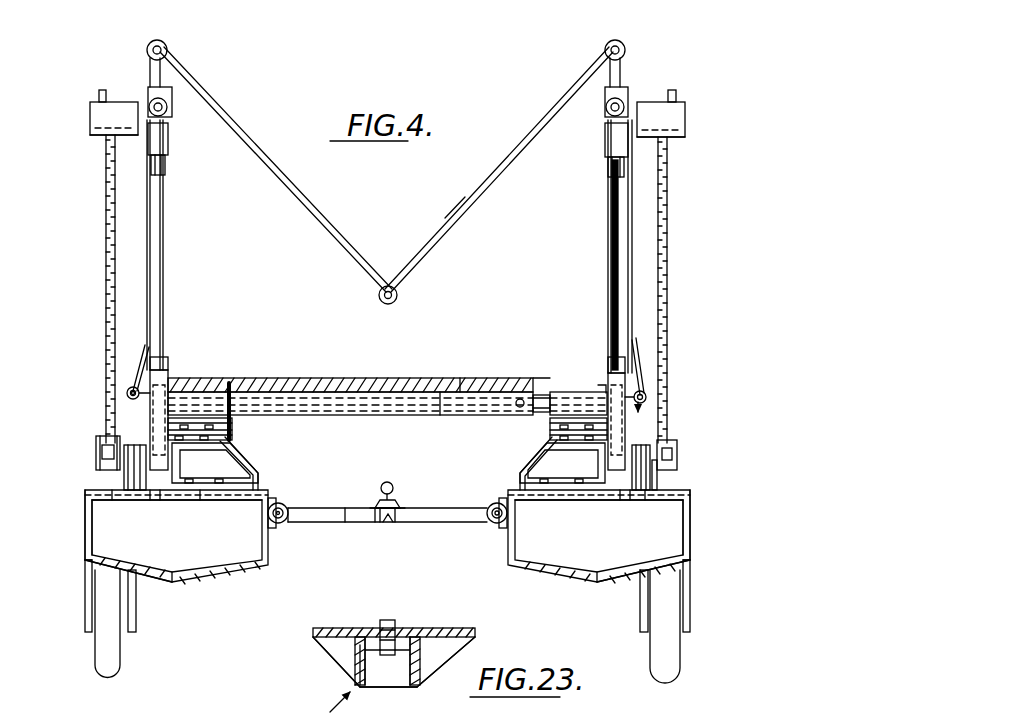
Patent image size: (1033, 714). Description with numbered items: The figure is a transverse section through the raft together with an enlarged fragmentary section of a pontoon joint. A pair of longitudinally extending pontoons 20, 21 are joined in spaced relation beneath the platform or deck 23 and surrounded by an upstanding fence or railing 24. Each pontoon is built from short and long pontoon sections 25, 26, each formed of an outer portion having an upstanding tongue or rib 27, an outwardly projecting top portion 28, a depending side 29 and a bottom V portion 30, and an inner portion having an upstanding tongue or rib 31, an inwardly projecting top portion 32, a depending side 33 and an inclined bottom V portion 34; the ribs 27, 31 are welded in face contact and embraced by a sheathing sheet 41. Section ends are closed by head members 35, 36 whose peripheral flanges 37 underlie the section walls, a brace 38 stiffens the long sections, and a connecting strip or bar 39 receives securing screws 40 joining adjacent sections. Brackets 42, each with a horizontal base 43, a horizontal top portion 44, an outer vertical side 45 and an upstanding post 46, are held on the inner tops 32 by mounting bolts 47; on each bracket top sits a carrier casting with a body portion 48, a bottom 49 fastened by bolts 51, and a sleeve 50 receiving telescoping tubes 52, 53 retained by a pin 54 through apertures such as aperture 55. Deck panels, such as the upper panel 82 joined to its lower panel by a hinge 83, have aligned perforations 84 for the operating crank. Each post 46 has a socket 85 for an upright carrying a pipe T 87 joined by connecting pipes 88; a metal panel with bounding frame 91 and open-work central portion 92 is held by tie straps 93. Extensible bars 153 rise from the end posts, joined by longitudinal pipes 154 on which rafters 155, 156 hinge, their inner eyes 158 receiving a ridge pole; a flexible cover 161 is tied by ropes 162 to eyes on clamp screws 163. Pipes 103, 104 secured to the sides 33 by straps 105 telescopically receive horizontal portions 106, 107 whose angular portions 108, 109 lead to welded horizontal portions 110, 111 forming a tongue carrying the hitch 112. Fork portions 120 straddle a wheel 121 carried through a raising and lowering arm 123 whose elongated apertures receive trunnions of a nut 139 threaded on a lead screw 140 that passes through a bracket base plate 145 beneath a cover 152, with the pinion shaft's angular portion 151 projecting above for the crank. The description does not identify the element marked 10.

In FIG. 4, the direction arrow 10 is at (653, 413).
In FIG. 4, the pontoon 20 is at (85, 562).
In FIG. 4, the pontoon 21 is at (690, 564).
In FIG. 4, the platform or deck 23 is at (412, 358).
In FIG. 4, the fence or railing 24 is at (179, 213).
In FIG. 23, the pontoon section 25 is at (333, 662).
In FIG. 4, the pontoon section 26 is at (262, 575).
In FIG. 23, the pontoon section 26 is at (455, 672).
In FIG. 4, the upstanding tongue or rib 27 is at (120, 495).
In FIG. 4, the horizontal top portion 28 is at (86, 492).
In FIG. 4, the depending side 29 is at (85, 525).
In FIG. 4, the bottom V portion 30 is at (160, 584).
In FIG. 23, the bottom V portion 30 is at (323, 646).
In FIG. 4, the upstanding tongue or rib 31 is at (150, 495).
In FIG. 4, the horizontal top portion 32 is at (192, 495).
In FIG. 4, the depending side 33 is at (265, 547).
In FIG. 23, the depending side 33 is at (340, 614).
In FIG. 4, the bottom V portion 34 is at (215, 580).
In FIG. 23, the head member 35 is at (390, 687).
In FIG. 23, the head member 36 is at (358, 672).
In FIG. 23, the peripheral flange 37 is at (361, 640).
In FIG. 4, the brace 38 is at (192, 576).
In FIG. 23, the connecting strip or bar 39 is at (420, 659).
In FIG. 23, the securing screws 40 is at (394, 627).
In FIG. 4, the sheathing sheet 41 is at (128, 450).
In FIG. 4, the bracket 42 is at (248, 463).
In FIG. 4, the horizontal base 43 is at (232, 495).
In FIG. 4, the horizontal top portion 44 is at (233, 437).
In FIG. 4, the outer vertical side 45 is at (388, 463).
In FIG. 4, the upstanding post 46 is at (163, 492).
In FIG. 4, the mounting bolts 47 is at (260, 492).
In FIG. 4, the carrier casting body portion 48 is at (235, 424).
In FIG. 4, the carrier casting bottom 49 is at (545, 447).
In FIG. 4, the sleeve 50 is at (208, 388).
In FIG. 4, the bolts 51 is at (550, 433).
In FIG. 4, the tube 52 is at (354, 416).
In FIG. 4, the second sleeve or tube 53 is at (540, 392).
In FIG. 4, the pin 54 is at (518, 400).
In FIG. 4, the aperture 55 is at (235, 390).
In FIG. 4, the upper panel 82 is at (462, 378).
In FIG. 4, the hinge 83 is at (540, 376).
In FIG. 4, the aligned perforations 84 is at (596, 380).
In FIG. 4, the socket 85 is at (170, 378).
In FIG. 4, the pipe T 87 is at (168, 125).
In FIG. 4, the connecting pipe 88 is at (150, 100).
In FIG. 4, the bounding frame 91 is at (168, 357).
In FIG. 4, the central portion 92 is at (162, 226).
In FIG. 4, the tie straps 93 is at (166, 168).
In FIG. 4, the pipe or tube 103 is at (288, 509).
In FIG. 4, the pipe or tube 104 is at (314, 455).
In FIG. 4, the straps 105 is at (300, 511).
In FIG. 4, the horizontal portion 106 is at (288, 522).
In FIG. 4, the horizontal portion 107 is at (495, 530).
In FIG. 4, the angularly extending portion 108 is at (347, 522).
In FIG. 4, the angularly extending portion 109 is at (420, 494).
In FIG. 4, the horizontal portion 110 is at (385, 522).
In FIG. 4, the horizontal portion 111 is at (390, 523).
In FIG. 4, the hitch 112 is at (428, 480).
In FIG. 4, the fork offset portion 120 is at (136, 635).
In FIG. 4, the wheel 121 is at (119, 663).
In FIG. 4, the raising and lowering arm 123 is at (97, 452).
In FIG. 4, the nut 139 is at (670, 465).
In FIG. 4, the lead screw 140 is at (106, 330).
In FIG. 4, the base plate 145 is at (95, 138).
In FIG. 4, the reduced angular portion 151 is at (98, 93).
In FIG. 4, the cover 152 is at (91, 128).
In FIG. 4, the extensible bar 153 is at (168, 62).
In FIG. 4, the longitudinal pipes 154 is at (164, 40).
In FIG. 4, the rafters 155 is at (302, 214).
In FIG. 4, the rafters 156 is at (460, 214).
In FIG. 4, the eye 158 is at (384, 304).
In FIG. 4, the cover 161 is at (453, 223).
In FIG. 4, the ropes 162 is at (138, 370).
In FIG. 4, the clamp screws 163 is at (127, 395).